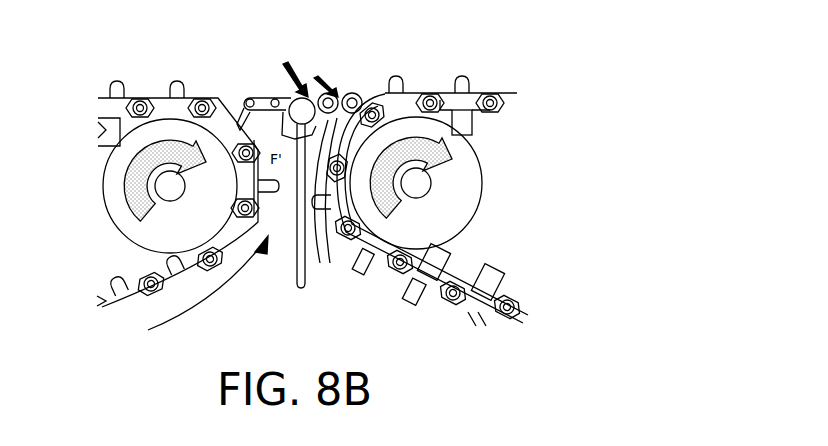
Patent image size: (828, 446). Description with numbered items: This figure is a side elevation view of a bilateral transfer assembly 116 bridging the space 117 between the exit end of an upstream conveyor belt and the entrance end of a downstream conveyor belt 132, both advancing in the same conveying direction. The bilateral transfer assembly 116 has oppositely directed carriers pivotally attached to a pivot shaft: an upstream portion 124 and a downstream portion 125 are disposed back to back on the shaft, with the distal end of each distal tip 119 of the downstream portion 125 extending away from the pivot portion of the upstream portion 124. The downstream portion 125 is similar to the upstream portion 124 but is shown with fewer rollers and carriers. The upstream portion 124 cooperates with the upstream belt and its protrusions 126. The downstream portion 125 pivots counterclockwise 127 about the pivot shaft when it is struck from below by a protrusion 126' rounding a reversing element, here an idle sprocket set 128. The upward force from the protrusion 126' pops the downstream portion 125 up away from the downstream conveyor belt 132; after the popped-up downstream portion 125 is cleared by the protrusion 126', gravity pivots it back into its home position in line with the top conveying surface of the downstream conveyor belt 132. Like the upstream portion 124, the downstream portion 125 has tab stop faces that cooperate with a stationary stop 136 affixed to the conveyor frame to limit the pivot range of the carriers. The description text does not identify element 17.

The protrusions 126 is at (142, 73).
The upstream portion 124 is at (250, 98).
The bilateral transfer assembly 116 is at (291, 71).
The counterclockwise 127 is at (340, 93).
The downstream portion 125 is at (347, 98).
The distal tip 119 is at (355, 112).
The downstream conveyor belt 132 is at (503, 93).
The idle sprocket set 128 is at (466, 207).
The stationary stop 136 is at (301, 289).
The protrusion 126' is at (330, 249).
The space 117 is at (182, 294).
The track segment 17 is at (477, 316).